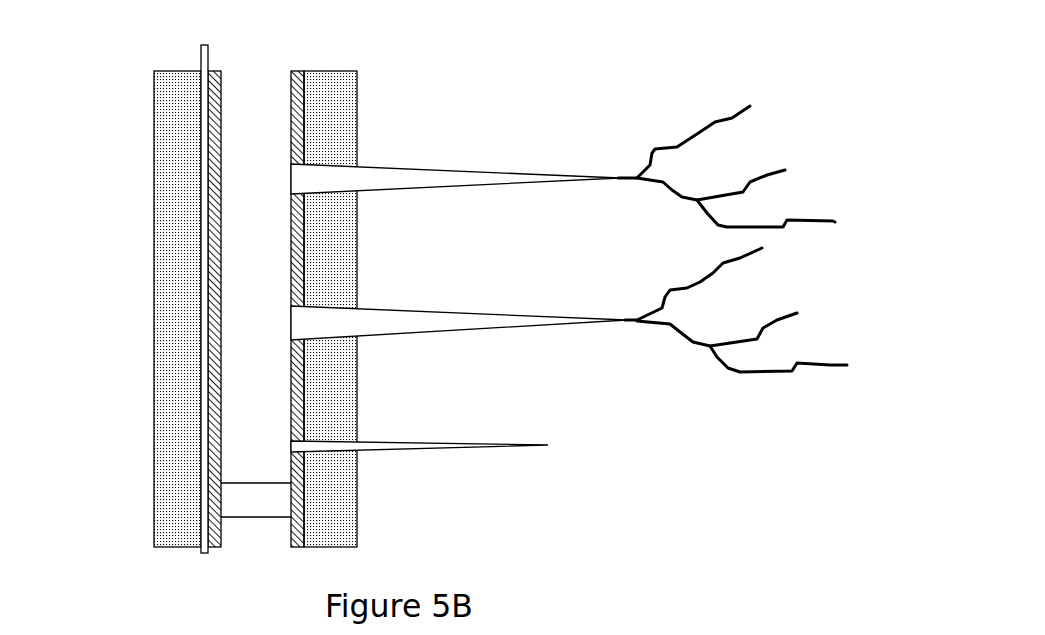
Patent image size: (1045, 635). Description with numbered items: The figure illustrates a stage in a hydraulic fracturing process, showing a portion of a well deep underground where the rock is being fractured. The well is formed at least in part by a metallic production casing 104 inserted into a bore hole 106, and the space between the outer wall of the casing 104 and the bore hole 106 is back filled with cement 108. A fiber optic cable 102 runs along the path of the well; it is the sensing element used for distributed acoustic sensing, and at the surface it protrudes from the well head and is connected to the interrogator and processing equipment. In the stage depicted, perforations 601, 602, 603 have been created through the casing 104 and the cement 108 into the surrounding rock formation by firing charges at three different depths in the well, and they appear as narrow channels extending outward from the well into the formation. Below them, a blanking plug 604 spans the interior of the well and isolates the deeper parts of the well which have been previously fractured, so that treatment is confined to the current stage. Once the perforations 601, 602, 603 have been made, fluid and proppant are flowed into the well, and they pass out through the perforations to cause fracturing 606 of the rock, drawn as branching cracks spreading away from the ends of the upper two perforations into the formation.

The fiber optic cable 102 is at (202, 72).
The metallic production casing 104 is at (300, 108).
The bore hole 106 is at (155, 177).
The cement 108 is at (340, 135).
The perforation 601 is at (467, 170).
The perforation 602 is at (465, 312).
The perforation 603 is at (458, 443).
The blanking plug 604 is at (268, 503).
The fracturing 606 is at (664, 213).